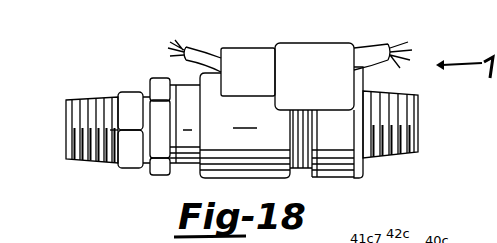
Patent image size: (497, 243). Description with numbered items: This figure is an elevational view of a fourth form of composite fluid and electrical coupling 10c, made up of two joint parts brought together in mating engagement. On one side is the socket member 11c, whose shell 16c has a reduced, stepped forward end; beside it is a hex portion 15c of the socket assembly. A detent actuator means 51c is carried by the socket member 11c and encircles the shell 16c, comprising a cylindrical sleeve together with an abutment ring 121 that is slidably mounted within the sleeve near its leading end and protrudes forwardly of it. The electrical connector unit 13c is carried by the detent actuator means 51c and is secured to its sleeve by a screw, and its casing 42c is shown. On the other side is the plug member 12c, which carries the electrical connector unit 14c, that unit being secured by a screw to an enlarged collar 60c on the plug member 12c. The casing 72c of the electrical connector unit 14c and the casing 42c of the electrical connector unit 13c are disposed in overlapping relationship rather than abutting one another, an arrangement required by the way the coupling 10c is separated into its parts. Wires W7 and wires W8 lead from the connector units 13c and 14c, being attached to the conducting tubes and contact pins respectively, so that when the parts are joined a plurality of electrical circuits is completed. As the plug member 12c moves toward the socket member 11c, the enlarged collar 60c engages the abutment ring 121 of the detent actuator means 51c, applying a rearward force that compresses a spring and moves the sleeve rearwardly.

The composite coupling 10c is at (243, 120).
The socket member 11c is at (70, 91).
The plug member 12c is at (420, 89).
The electrical connector unit 13c is at (181, 46).
The electrical connector unit 14c is at (403, 42).
The hex nut 15c is at (128, 168).
The shell 16c is at (159, 183).
The detent actuator means 51c is at (194, 183).
The casing 42c is at (250, 48).
The casing 72c is at (306, 47).
The abutment ring 121 is at (305, 138).
The enlarged collar 60c is at (357, 176).
The wires W7 is at (155, 40).
The wires W8 is at (407, 44).